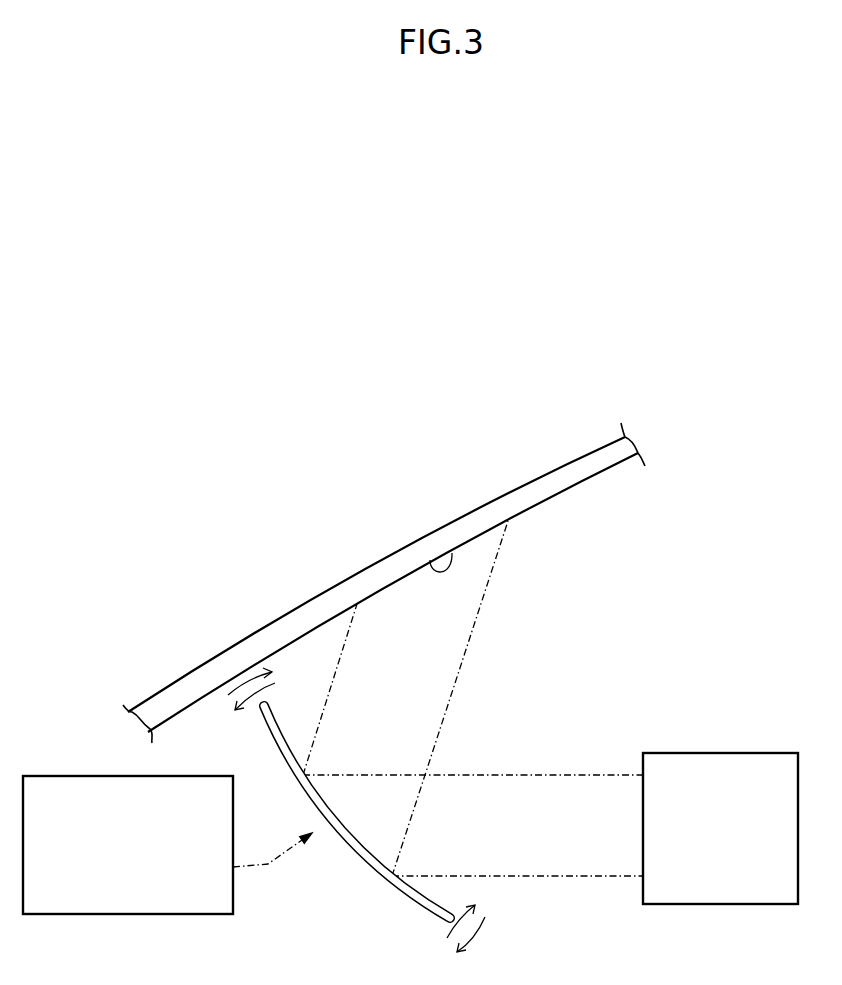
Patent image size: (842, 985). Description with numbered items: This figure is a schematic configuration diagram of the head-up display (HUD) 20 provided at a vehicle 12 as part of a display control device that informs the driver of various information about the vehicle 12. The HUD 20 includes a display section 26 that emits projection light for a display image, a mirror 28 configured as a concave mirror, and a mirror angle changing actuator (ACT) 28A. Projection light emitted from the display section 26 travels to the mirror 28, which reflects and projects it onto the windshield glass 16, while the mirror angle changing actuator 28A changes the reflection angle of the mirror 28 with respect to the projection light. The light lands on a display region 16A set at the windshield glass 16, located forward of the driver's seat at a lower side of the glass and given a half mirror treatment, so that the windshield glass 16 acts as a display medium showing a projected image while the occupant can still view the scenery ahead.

The vehicle 12 is at (696, 548).
The windshield glass 16 is at (532, 482).
The display region 16A is at (452, 553).
The head-up display 20 is at (588, 700).
The display section 26 is at (740, 752).
The mirror 28 is at (380, 877).
The mirror angle changing actuator 28A is at (170, 914).